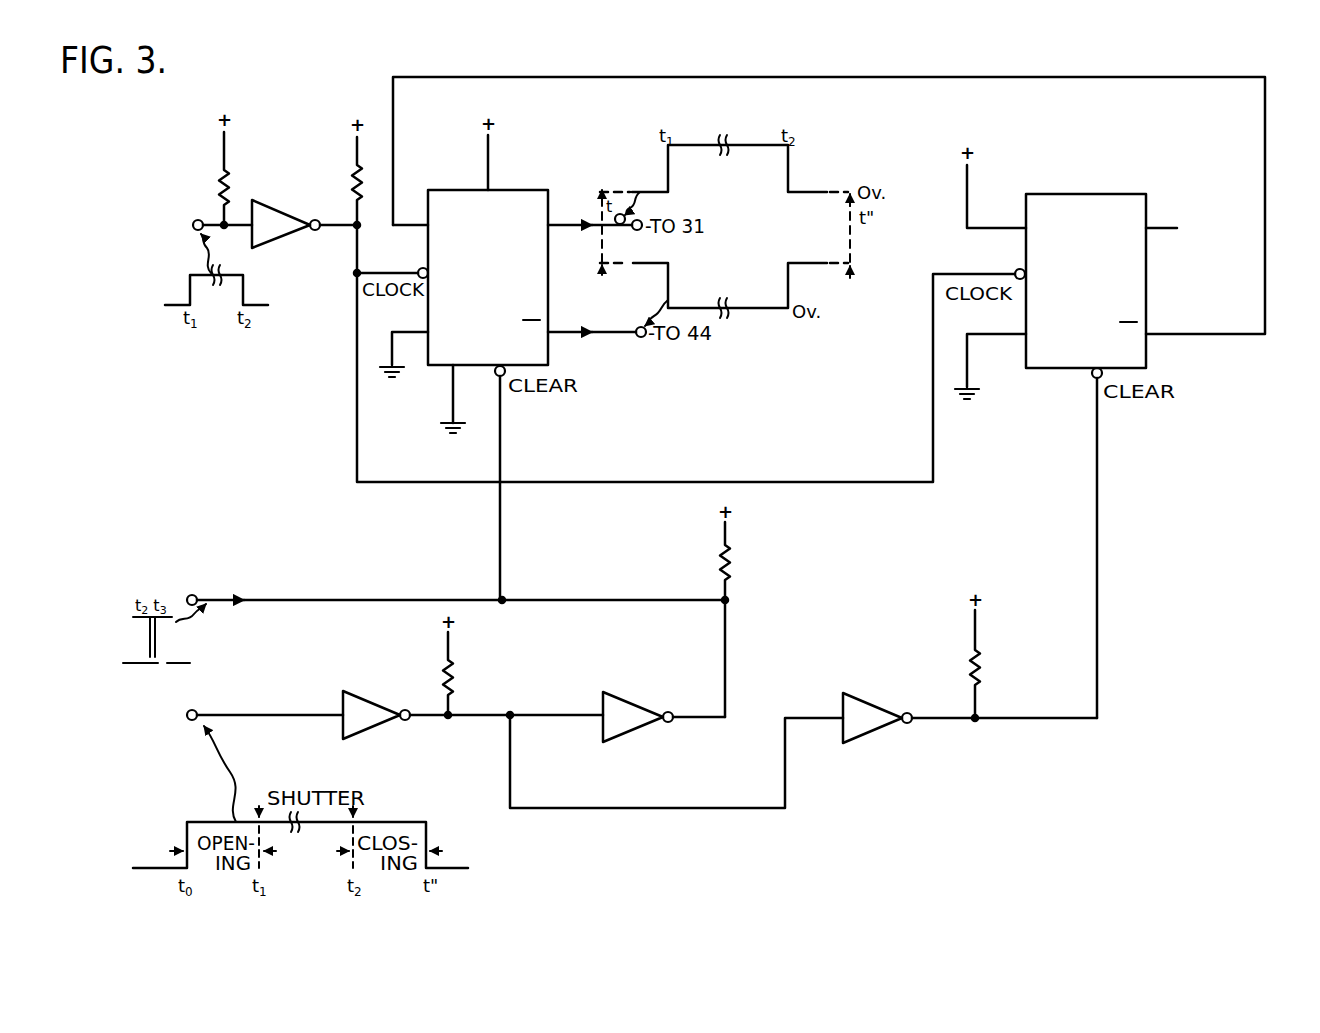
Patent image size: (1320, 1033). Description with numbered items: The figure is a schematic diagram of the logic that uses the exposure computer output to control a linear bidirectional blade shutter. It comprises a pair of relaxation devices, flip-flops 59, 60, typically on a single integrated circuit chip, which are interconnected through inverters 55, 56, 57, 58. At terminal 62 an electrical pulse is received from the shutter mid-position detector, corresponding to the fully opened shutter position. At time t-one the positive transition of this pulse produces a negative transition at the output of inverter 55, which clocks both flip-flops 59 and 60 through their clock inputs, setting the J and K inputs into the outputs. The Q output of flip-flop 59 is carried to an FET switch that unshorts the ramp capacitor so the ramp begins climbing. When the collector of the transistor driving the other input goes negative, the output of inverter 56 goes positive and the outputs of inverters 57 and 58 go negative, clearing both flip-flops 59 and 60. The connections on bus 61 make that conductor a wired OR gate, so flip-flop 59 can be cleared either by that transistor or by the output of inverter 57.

The inverter 55 is at (278, 211).
The inverter 56 is at (368, 700).
The inverter 57 is at (634, 703).
The inverter 58 is at (875, 693).
The flip-flop 59 is at (520, 190).
The flip-flop 60 is at (1121, 186).
The bus 61 is at (598, 598).
The terminal 62 is at (199, 209).